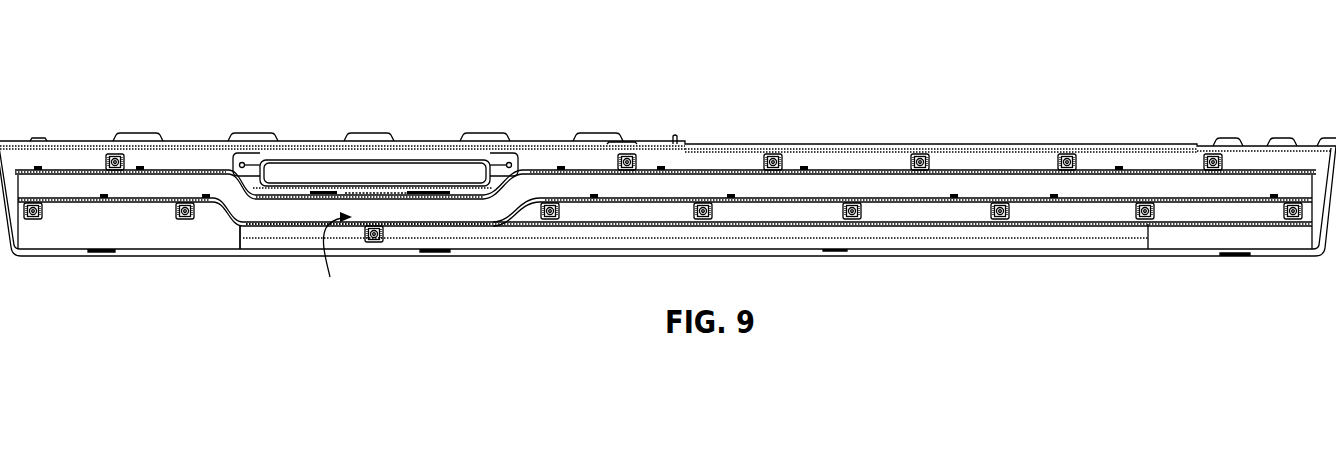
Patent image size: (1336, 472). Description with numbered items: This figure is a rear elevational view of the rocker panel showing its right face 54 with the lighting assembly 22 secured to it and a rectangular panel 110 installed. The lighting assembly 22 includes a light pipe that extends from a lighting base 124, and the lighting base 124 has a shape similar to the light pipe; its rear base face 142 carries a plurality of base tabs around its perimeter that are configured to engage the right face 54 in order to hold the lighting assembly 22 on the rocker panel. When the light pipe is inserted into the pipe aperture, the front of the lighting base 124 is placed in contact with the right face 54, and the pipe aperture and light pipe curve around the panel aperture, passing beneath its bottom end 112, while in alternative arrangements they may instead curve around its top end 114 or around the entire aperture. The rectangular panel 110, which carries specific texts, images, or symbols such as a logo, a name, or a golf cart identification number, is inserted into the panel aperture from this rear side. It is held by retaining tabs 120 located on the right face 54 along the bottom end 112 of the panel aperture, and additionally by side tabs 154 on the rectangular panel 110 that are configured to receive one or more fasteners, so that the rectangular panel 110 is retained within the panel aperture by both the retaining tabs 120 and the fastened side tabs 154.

The right face 54 is at (122, 232).
The rear base face 142 is at (258, 213).
The lighting assembly 22 is at (334, 262).
The lighting base 124 is at (412, 210).
The bottom end 112 is at (295, 187).
The retaining tabs 120 is at (400, 190).
The rectangular panel 110 is at (407, 173).
The top end 114 is at (465, 155).
The side tabs 154 is at (515, 157).